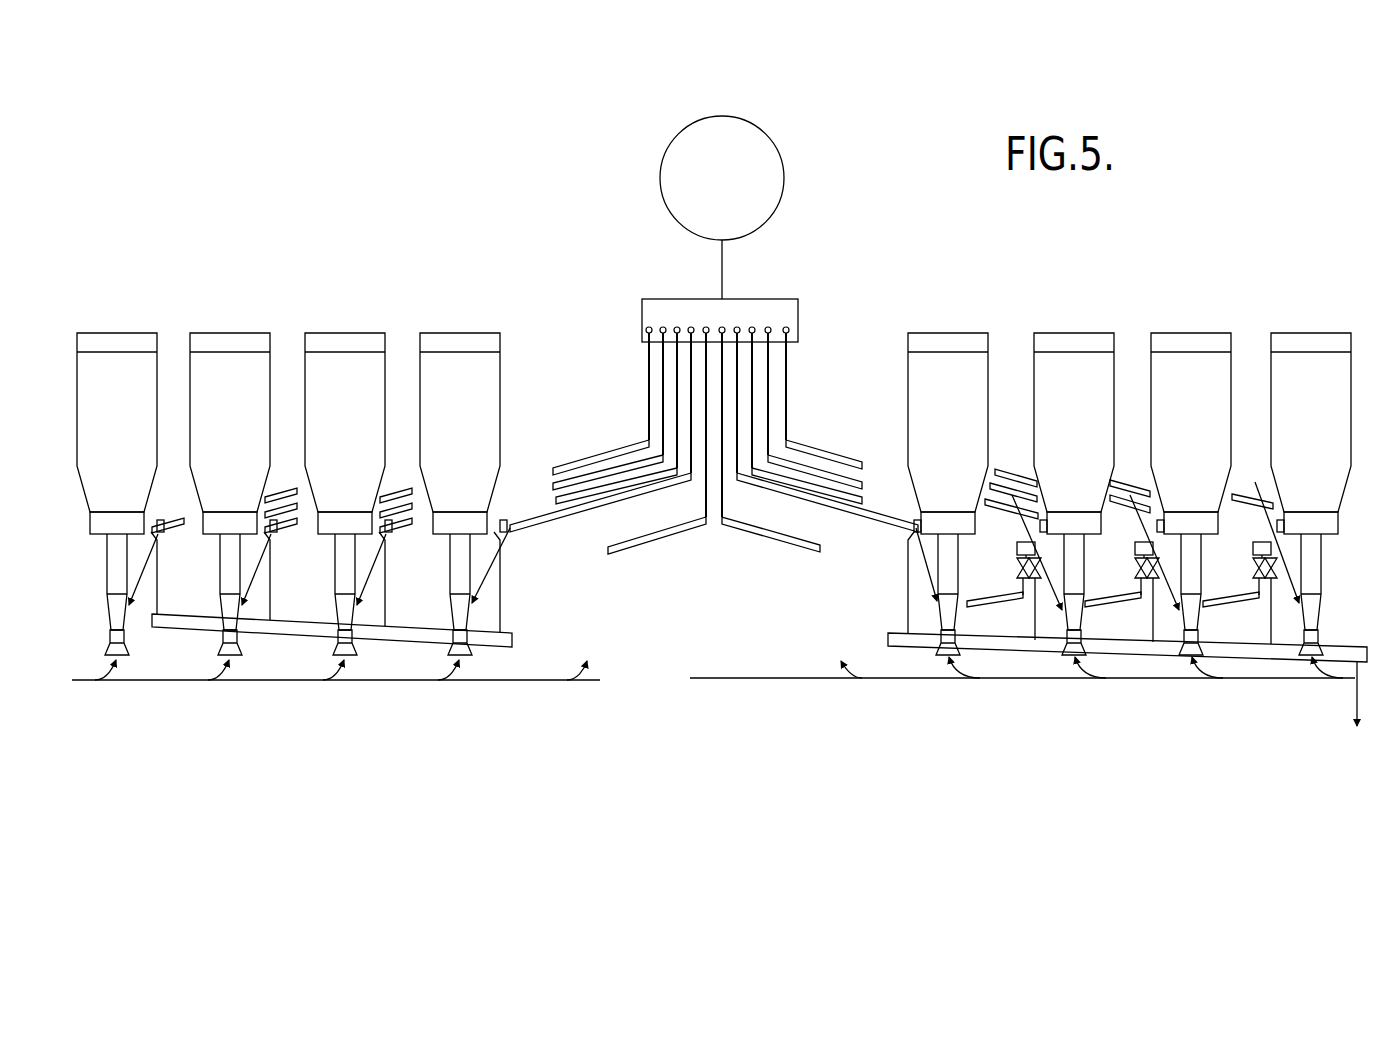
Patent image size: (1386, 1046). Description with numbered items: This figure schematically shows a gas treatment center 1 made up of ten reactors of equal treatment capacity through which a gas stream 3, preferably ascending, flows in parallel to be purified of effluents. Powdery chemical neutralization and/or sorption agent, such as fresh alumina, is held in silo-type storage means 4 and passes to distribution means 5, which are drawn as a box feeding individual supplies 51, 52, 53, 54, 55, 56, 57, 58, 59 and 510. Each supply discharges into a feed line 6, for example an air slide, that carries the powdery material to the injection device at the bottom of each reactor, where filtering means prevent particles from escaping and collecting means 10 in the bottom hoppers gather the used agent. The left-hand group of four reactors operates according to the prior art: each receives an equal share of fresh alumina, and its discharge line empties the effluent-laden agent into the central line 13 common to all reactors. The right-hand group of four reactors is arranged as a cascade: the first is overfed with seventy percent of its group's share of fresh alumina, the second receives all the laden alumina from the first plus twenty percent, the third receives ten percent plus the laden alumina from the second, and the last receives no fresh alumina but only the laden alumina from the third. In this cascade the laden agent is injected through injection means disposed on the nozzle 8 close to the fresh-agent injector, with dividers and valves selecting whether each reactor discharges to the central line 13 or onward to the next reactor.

The gas treatment center 1 is at (393, 229).
The gas stream 3 is at (693, 681).
The storage means 4 is at (656, 167).
The distribution means 5 is at (803, 293).
The supply 51 is at (647, 356).
The supply 52 is at (661, 368).
The supply 53 is at (676, 384).
The supply 54 is at (690, 401).
The supply 55 is at (705, 426).
The supply 56 is at (723, 500).
The supply 57 is at (787, 351).
The supply 58 is at (770, 378).
The supply 59 is at (753, 404).
The supply 510 is at (738, 443).
The feed line 6 is at (593, 488).
The nozzle 8 is at (117, 607).
The collecting means 10 is at (91, 541).
The central line 13 is at (512, 640).